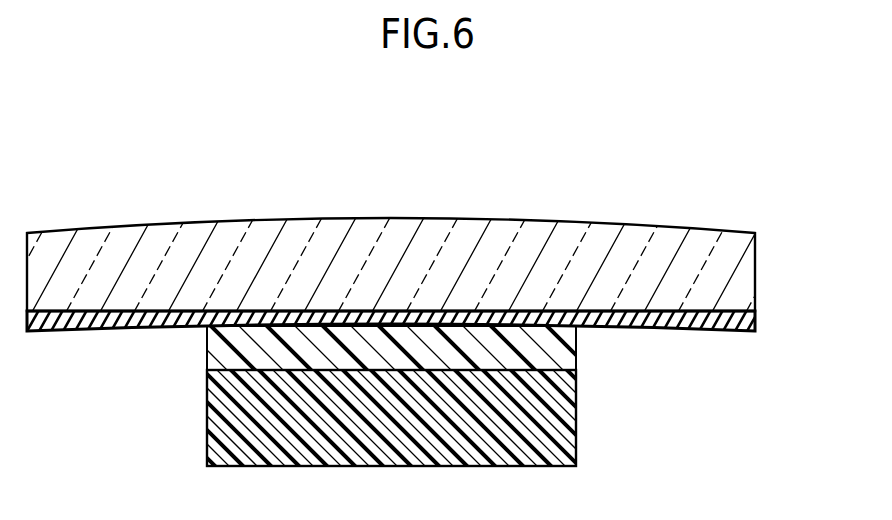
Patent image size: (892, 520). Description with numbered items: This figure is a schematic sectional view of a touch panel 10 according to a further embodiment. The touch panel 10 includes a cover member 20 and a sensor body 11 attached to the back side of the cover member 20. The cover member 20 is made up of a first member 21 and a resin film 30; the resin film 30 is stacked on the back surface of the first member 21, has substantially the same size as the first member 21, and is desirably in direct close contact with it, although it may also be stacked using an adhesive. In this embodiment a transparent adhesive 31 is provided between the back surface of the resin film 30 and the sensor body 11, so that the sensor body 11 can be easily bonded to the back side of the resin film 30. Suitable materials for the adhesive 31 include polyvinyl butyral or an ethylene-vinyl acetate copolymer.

The touch panel 10 is at (524, 134).
The cover member 20 is at (572, 178).
The first member 21 is at (757, 267).
The resin film 30 is at (757, 326).
The transparent adhesive 31 is at (207, 349).
The sensor body 11 is at (578, 428).